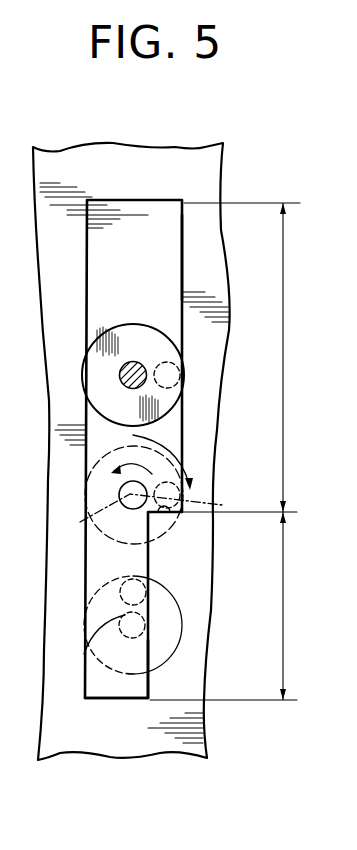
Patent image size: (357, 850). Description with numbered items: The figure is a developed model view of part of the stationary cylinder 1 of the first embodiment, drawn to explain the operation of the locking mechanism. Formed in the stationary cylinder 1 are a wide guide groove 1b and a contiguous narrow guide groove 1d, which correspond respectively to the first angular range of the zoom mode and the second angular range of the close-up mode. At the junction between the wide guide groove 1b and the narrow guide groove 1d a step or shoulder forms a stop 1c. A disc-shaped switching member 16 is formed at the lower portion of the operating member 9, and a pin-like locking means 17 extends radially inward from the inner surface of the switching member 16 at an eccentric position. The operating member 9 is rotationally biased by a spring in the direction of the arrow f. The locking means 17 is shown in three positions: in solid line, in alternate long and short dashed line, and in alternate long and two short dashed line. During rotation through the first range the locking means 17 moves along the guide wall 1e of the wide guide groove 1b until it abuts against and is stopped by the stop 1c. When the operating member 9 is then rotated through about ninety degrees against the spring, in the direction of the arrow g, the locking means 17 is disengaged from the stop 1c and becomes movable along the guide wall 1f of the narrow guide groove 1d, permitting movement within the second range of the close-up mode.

The stationary cylinder 1 is at (214, 168).
The wide guide groove 1b is at (163, 208).
The stop 1c is at (166, 514).
The narrow guide groove 1d is at (107, 690).
The guide wall 1e is at (181, 256).
The guide wall 1f is at (140, 656).
The operating member 9 is at (128, 362).
The switching member 16 is at (151, 340).
The locking means 17 is at (183, 364).
The arrow f is at (174, 443).
The arrow g is at (125, 465).